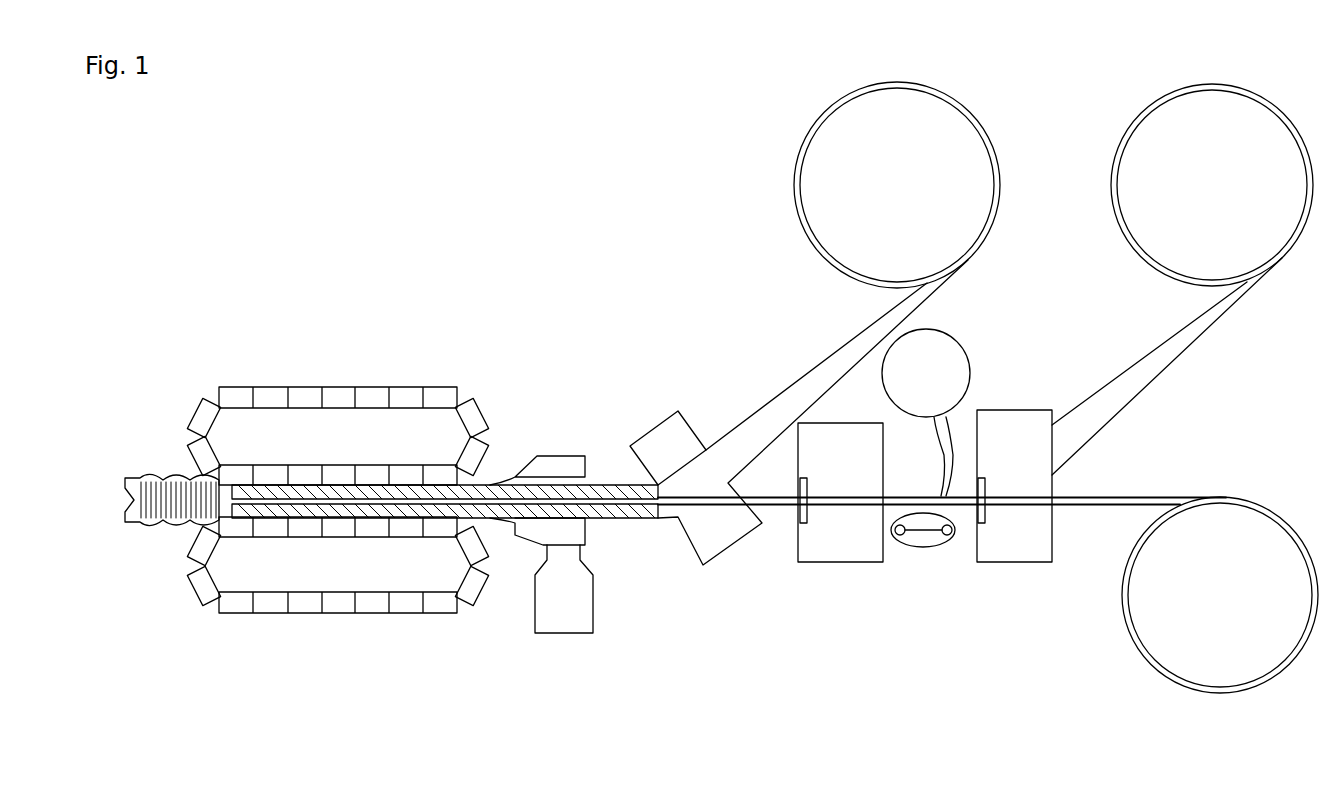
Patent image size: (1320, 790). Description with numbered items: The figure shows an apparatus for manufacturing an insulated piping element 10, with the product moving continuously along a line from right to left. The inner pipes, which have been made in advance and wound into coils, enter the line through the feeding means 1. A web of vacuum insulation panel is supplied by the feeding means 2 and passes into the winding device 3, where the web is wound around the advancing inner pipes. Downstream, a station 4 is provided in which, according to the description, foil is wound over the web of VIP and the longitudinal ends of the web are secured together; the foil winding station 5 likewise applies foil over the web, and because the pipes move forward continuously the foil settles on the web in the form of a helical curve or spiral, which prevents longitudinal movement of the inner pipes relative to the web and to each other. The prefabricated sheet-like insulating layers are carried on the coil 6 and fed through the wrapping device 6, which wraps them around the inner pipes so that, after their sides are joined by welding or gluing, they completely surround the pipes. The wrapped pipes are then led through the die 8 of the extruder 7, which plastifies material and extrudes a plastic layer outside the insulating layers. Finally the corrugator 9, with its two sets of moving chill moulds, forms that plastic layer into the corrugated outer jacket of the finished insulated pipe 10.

The means for feeding the inner pipes 1 is at (1222, 517).
The means for feeding the web of VIP 2 is at (1122, 187).
The winding device 3 is at (1013, 420).
The foil winding means 4 is at (948, 353).
The foil winding station 5 is at (837, 552).
The coil and wrapping device for insulation layers 6 is at (805, 186).
The extruder 7 is at (582, 603).
The die 8 is at (560, 467).
The corrugator 9 is at (363, 423).
The piping element 10 is at (152, 452).